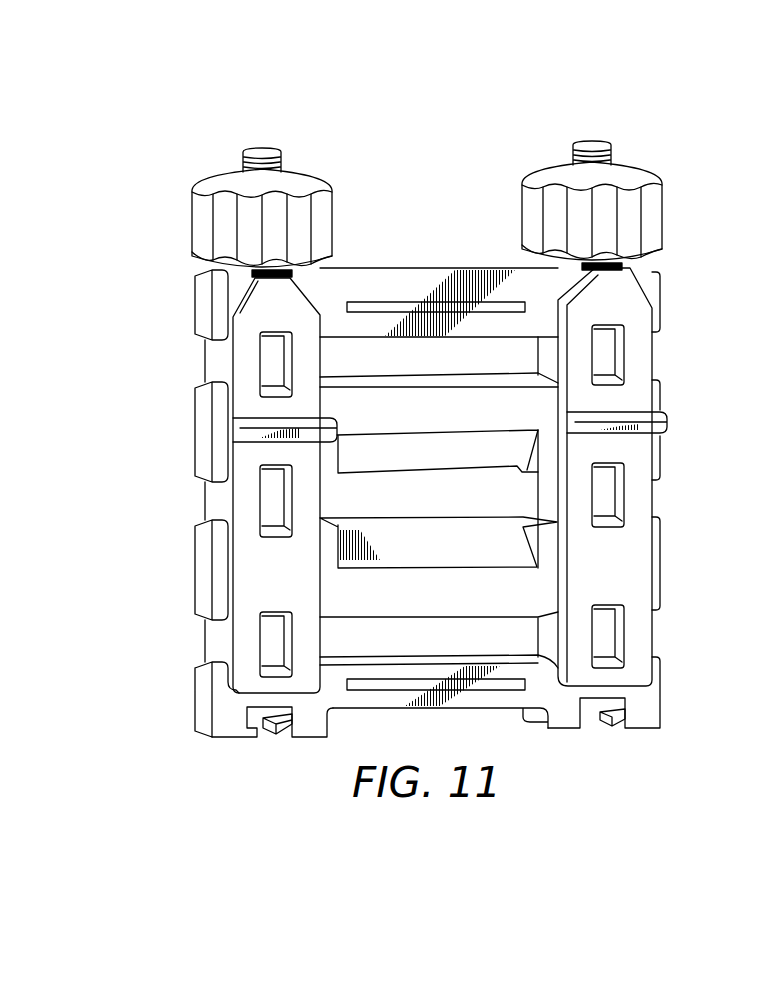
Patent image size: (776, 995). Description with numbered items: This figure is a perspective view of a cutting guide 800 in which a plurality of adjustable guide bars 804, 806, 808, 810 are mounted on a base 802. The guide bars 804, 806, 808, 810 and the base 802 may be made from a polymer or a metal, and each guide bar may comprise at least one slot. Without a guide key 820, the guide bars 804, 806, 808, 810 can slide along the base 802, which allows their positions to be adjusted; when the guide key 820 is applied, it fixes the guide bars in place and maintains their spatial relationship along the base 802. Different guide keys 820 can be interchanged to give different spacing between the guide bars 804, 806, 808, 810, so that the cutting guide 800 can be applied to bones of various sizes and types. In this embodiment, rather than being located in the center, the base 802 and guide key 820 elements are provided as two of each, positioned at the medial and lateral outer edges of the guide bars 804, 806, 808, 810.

The cutting guide 800 is at (210, 107).
The base 802 is at (192, 220).
The guide bar 804 is at (655, 284).
The guide bar 806 is at (545, 400).
The guide bar 808 is at (547, 590).
The guide bar 810 is at (650, 705).
The guide key 820 is at (303, 585).